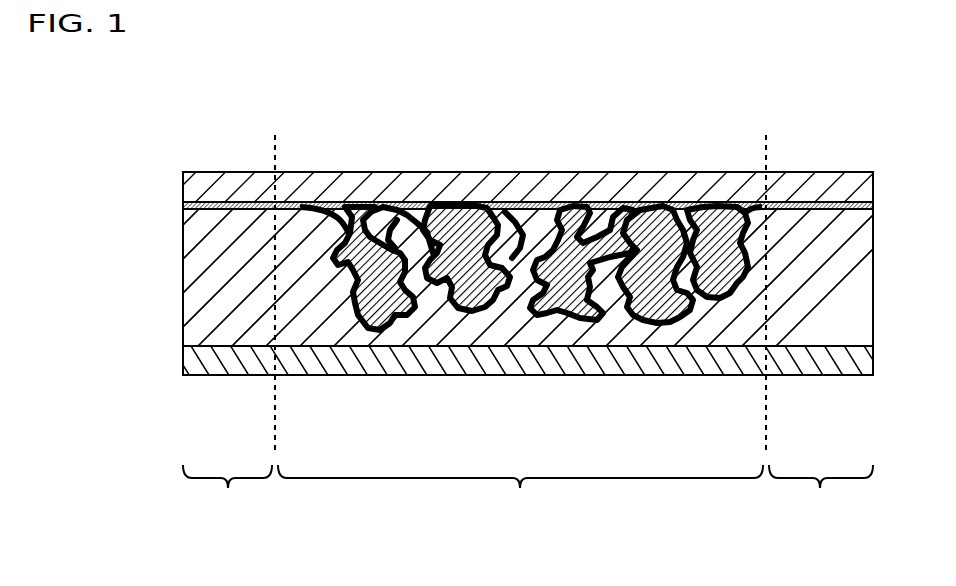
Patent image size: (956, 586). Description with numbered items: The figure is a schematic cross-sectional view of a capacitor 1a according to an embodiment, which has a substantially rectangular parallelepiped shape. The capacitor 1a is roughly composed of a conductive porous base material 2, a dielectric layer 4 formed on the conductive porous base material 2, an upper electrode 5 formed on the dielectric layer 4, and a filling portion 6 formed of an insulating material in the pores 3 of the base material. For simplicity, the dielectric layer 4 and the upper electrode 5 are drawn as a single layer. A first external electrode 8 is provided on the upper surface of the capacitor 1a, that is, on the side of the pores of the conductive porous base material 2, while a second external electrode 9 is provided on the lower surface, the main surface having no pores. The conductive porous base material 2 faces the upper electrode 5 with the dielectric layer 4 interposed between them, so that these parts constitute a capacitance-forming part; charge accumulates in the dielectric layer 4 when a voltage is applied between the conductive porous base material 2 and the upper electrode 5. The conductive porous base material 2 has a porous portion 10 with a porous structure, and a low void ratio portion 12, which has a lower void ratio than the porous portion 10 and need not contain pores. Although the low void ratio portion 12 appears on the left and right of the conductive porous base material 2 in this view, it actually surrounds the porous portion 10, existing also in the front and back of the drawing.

The capacitor 1a is at (190, 150).
The conductive porous base material 2 is at (868, 236).
The pores 3 is at (647, 300).
The dielectric layer 4 is at (577, 203).
The upper electrode 5 is at (528, 205).
The filling portion 6 is at (343, 210).
The first external electrode 8 is at (670, 178).
The second external electrode 9 is at (498, 378).
The porous portion 10 is at (520, 496).
The low void ratio portion 12 is at (528, 330).